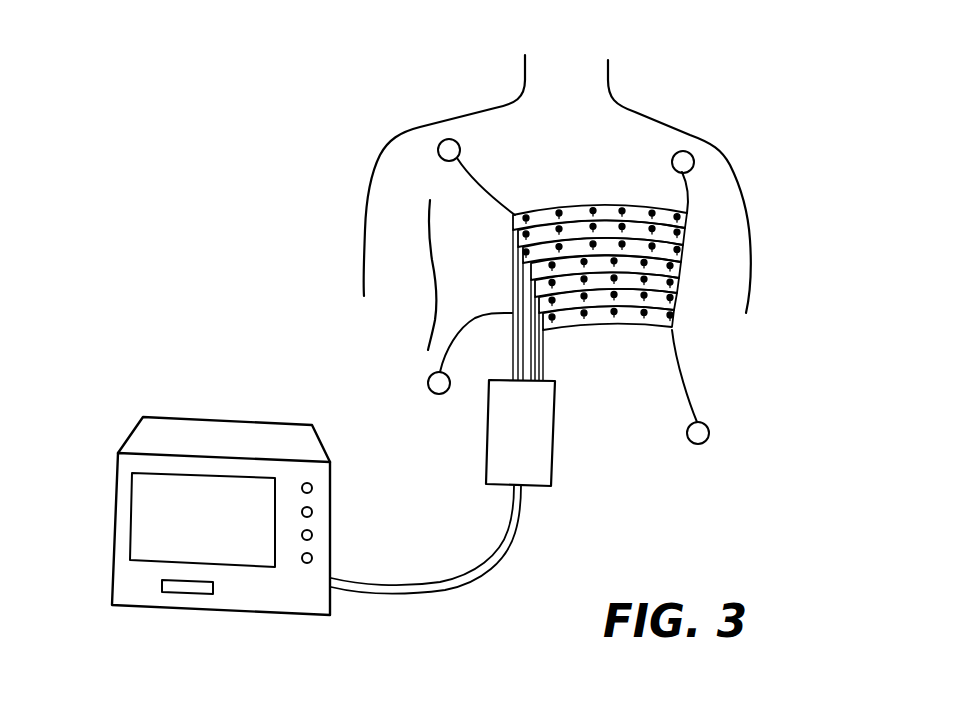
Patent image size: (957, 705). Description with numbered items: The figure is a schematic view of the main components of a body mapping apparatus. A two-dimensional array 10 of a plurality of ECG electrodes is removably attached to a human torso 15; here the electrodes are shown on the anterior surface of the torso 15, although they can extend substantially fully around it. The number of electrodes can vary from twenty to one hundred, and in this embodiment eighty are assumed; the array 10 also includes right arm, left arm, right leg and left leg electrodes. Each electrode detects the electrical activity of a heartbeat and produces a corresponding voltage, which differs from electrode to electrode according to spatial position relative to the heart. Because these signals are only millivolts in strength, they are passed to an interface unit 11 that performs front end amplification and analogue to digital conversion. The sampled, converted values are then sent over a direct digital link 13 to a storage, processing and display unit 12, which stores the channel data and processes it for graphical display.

The two-dimensional array 10 is at (680, 290).
The interface unit 11 is at (553, 471).
The storage, processing and display unit 12 is at (122, 477).
The direct digital link 13 is at (481, 570).
The human torso 15 is at (748, 131).